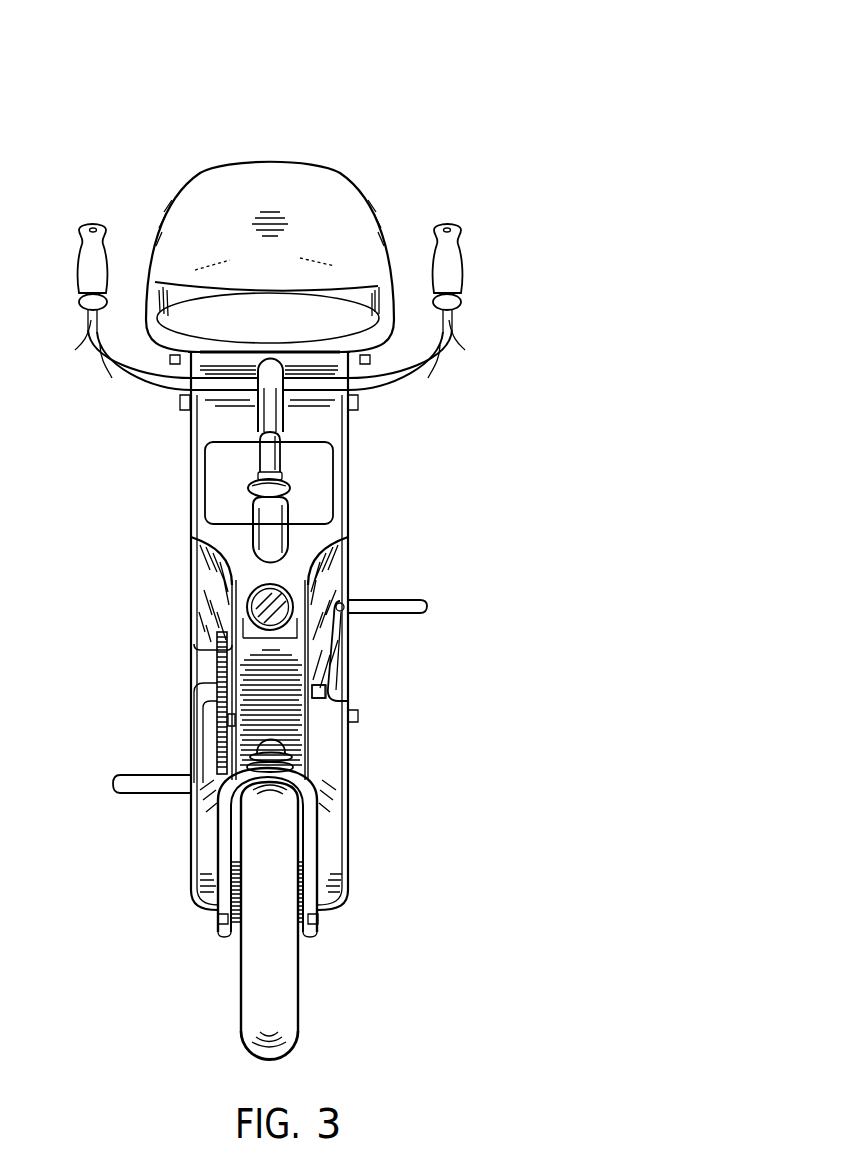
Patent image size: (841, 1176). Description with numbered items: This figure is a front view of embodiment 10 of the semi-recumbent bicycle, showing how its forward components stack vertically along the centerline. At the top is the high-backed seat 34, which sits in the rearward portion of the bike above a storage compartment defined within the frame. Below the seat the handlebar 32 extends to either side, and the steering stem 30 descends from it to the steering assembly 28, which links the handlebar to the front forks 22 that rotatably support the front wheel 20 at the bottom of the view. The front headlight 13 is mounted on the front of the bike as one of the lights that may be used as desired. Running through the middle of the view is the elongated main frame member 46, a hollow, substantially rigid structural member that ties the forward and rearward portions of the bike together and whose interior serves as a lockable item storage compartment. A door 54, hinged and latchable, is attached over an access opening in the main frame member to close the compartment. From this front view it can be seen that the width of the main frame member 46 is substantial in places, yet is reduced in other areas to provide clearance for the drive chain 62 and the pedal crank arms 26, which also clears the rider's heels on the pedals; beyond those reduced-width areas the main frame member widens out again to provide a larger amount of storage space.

The semi-recumbent bicycle embodiment 10 is at (446, 119).
The front headlight 13 is at (272, 603).
The front wheel 20 is at (278, 1011).
The front forks 22 is at (310, 805).
The crank arms 26 is at (340, 653).
The steering assembly 28 is at (268, 534).
The steering stem 30 is at (268, 458).
The handlebar 32 is at (408, 377).
The high-backed seat 34 is at (235, 166).
The main frame member 46 is at (330, 540).
The door 54 is at (310, 460).
The drive chain 62 is at (220, 666).